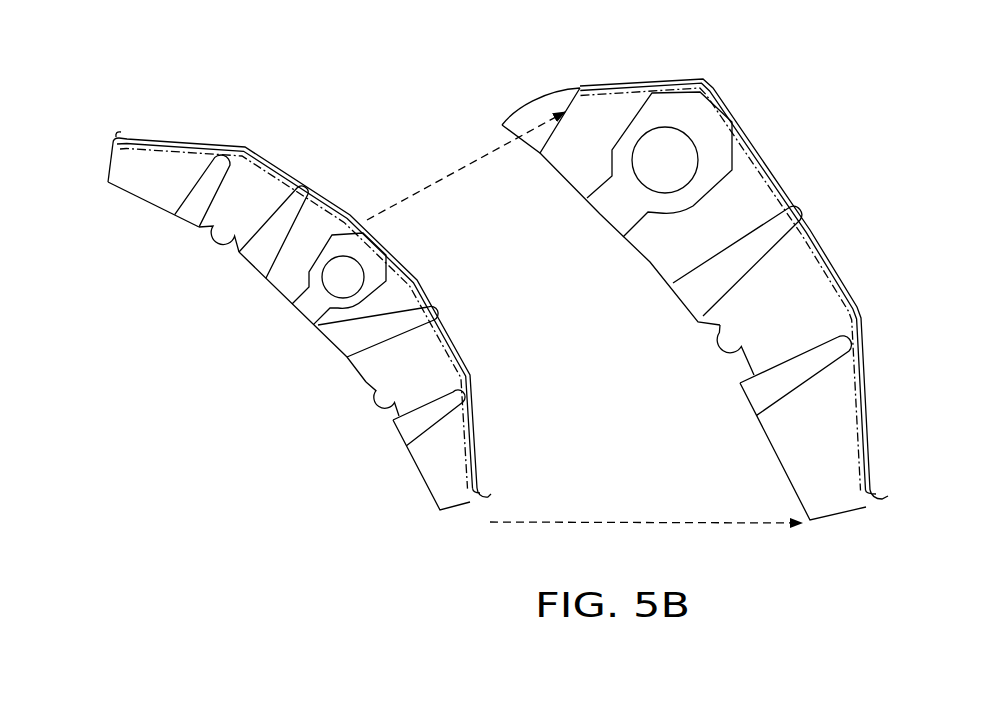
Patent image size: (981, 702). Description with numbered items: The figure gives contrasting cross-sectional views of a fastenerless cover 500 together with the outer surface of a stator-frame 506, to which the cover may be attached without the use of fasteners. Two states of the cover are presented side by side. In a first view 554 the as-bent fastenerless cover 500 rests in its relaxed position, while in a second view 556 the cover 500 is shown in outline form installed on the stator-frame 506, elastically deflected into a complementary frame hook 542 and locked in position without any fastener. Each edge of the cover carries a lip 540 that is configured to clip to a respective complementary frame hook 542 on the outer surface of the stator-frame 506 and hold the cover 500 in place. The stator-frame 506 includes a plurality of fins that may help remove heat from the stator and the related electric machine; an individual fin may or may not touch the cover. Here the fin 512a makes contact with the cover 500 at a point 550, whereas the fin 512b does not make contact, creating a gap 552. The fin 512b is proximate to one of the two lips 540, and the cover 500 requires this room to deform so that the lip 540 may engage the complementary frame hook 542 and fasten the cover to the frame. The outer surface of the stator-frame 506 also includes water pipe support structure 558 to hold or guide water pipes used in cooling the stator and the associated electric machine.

The fastenerless cover 500 is at (401, 88).
The stator-frame 506 is at (269, 376).
The fin 512a is at (262, 250).
The fin 512b is at (197, 203).
The lip 540 is at (114, 140).
The complementary frame hook 542 is at (139, 136).
The point 550 is at (313, 186).
The gap 552 is at (243, 167).
The first view 554 is at (874, 436).
The second view 556 is at (851, 458).
The water pipe support structure 558 is at (219, 248).